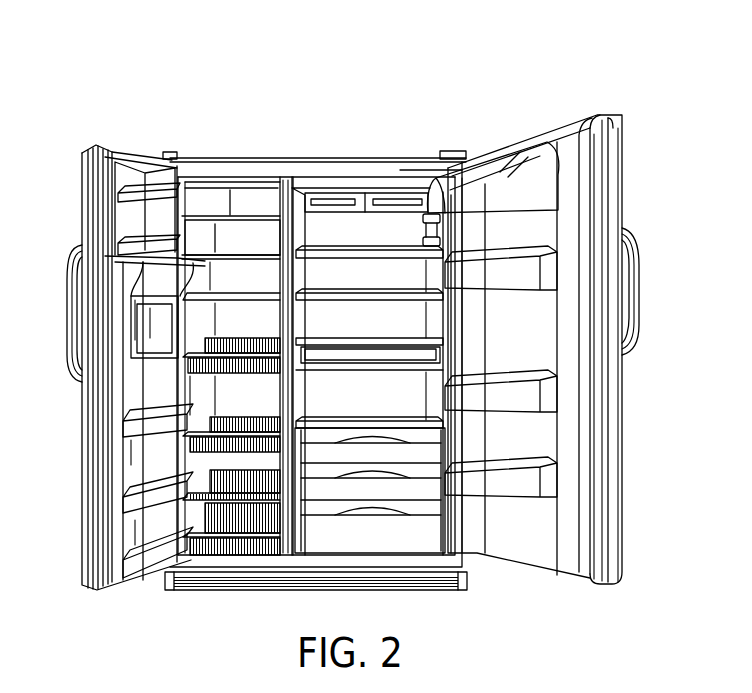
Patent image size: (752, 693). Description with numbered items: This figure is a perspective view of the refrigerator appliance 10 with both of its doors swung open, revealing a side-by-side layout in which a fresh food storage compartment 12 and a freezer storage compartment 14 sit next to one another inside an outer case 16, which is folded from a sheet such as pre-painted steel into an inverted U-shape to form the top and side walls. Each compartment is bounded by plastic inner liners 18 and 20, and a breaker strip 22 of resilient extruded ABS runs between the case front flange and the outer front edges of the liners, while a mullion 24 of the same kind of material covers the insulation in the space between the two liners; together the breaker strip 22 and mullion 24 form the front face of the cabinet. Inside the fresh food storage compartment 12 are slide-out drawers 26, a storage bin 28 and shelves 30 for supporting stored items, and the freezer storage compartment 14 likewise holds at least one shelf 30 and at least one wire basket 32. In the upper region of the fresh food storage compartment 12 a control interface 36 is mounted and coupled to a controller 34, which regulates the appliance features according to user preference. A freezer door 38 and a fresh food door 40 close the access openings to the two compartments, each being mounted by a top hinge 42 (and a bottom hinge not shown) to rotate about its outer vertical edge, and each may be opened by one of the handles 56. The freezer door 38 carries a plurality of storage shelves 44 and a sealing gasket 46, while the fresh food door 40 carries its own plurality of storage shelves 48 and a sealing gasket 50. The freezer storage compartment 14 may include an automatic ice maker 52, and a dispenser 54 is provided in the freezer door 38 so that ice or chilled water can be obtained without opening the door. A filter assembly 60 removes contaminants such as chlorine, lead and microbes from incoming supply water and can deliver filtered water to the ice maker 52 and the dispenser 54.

The refrigerator appliance 10 is at (453, 71).
The fresh food storage compartment 12 is at (347, 183).
The freezer storage compartment 14 is at (252, 197).
The outer case 16 is at (308, 160).
The inner liner 18 is at (442, 315).
The inner liner 20 is at (187, 515).
The breaker strip 22 is at (427, 166).
The mullion 24 is at (282, 410).
The slide-out drawers 26 is at (425, 453).
The storage bin 28 is at (380, 545).
The shelves 30 is at (262, 294).
The wire basket 32 is at (244, 360).
The controller 34 is at (370, 204).
The control interface 36 is at (322, 203).
The freezer door 38 is at (77, 191).
The fresh food door 40 is at (629, 144).
The top hinge 42 is at (167, 158).
The storage shelves 44 is at (128, 428).
The sealing gasket 46 is at (107, 530).
The storage shelves 48 is at (513, 495).
The sealing gasket 50 is at (588, 222).
The automatic ice maker 52 is at (236, 250).
The dispenser 54 is at (133, 347).
The handles 56 is at (70, 292).
The filter assembly 60 is at (437, 247).